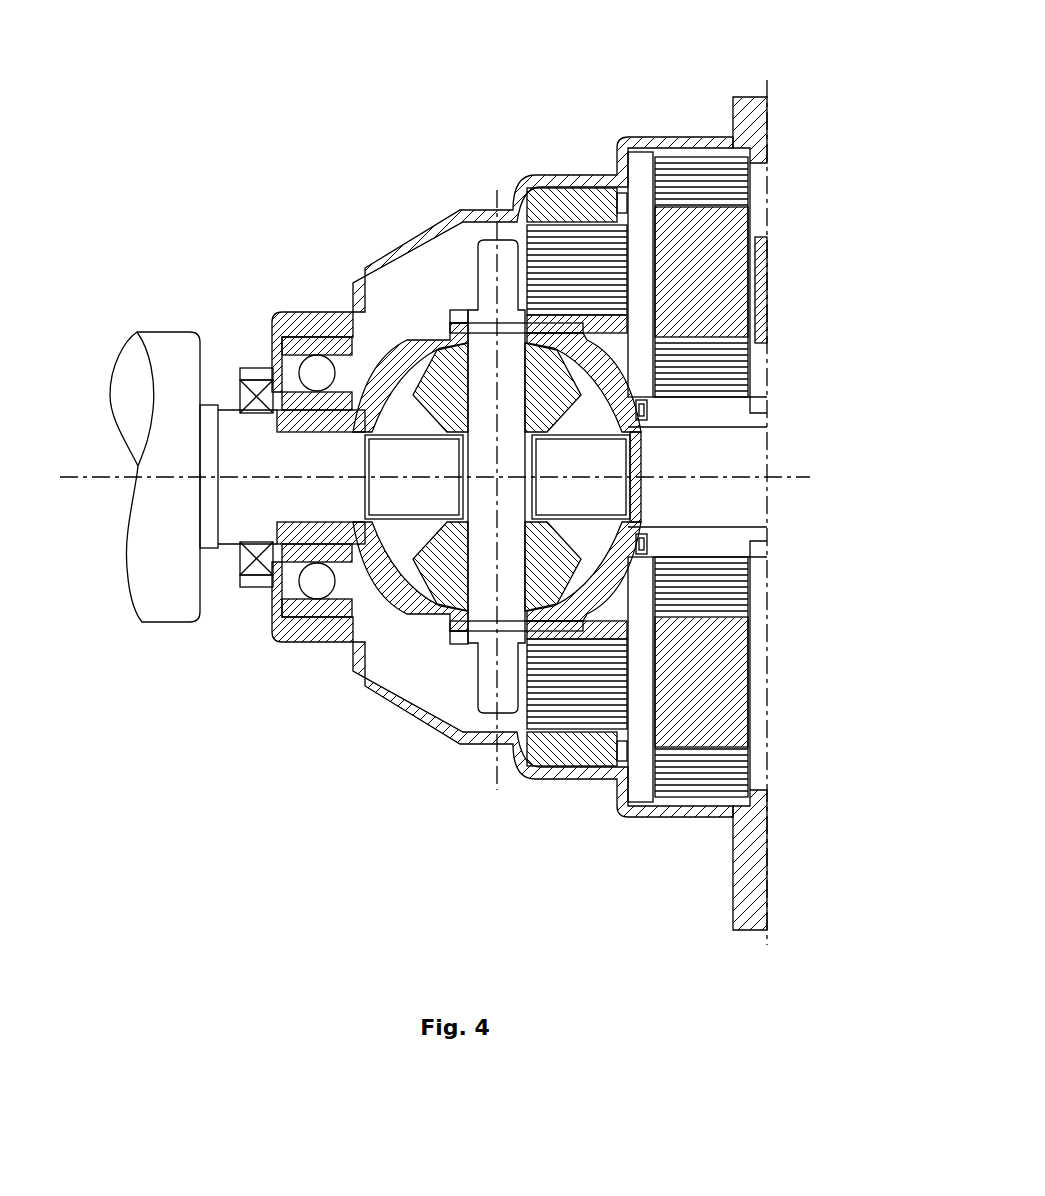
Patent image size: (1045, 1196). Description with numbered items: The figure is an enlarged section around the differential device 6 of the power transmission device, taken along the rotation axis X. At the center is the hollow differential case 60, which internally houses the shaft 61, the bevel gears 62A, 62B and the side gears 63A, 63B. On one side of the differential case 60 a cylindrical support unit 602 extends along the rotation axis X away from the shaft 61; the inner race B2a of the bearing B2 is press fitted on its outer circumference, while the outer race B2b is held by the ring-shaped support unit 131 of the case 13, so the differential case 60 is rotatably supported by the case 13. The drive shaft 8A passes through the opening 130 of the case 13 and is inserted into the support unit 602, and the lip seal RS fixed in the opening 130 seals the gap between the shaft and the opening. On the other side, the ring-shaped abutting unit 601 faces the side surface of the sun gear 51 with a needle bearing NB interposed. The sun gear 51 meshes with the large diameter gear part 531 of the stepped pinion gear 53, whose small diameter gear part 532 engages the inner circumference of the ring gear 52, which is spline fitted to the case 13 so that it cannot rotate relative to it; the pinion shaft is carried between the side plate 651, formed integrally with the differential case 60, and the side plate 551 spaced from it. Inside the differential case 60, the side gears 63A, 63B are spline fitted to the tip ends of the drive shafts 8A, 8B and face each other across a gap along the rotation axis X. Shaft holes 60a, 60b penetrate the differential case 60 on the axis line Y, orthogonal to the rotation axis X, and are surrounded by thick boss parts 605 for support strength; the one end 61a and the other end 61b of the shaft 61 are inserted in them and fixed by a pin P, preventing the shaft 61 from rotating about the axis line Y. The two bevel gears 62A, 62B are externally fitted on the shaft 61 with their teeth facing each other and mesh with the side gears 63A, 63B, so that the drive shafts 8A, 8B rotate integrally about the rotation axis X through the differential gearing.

The differential device 6 is at (405, 168).
The drive shaft 8A is at (135, 512).
The drive shaft 8B is at (760, 497).
The case 13 is at (617, 806).
The opening 130 is at (250, 586).
The support unit 131 is at (285, 330).
The bearing B2 is at (305, 401).
The inner race B2a is at (333, 392).
The outer race B2b is at (292, 338).
The lip seal RS is at (258, 545).
The sun gear 51 is at (700, 427).
The ring gear 52 is at (570, 208).
The stepped pinion gear 53 is at (653, 407).
The large diameter gear part 531 is at (690, 178).
The small diameter gear part 532 is at (725, 68).
The side plate 551 is at (768, 258).
The differential case 60 is at (497, 469).
The shaft hole 60a is at (465, 312).
The shaft hole 60b is at (452, 641).
The abutting unit 601 is at (645, 395).
The support unit 602 is at (330, 432).
The boss part 605 is at (562, 312).
The shaft 61 is at (511, 432).
The one end 61a is at (482, 307).
The other end 61b is at (482, 646).
The side plate 651 is at (505, 258).
The pin P is at (452, 328).
The needle bearing NB is at (643, 421).
The bevel gear 62A is at (527, 410).
The bevel gear 62B is at (527, 560).
The side gear 63A is at (414, 477).
The side gear 63B is at (581, 477).
The rotation axis X is at (425, 477).
The axis line Y is at (496, 502).